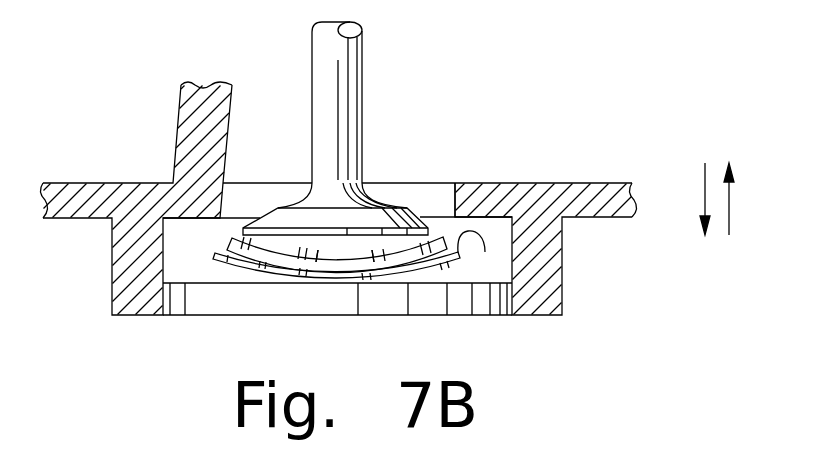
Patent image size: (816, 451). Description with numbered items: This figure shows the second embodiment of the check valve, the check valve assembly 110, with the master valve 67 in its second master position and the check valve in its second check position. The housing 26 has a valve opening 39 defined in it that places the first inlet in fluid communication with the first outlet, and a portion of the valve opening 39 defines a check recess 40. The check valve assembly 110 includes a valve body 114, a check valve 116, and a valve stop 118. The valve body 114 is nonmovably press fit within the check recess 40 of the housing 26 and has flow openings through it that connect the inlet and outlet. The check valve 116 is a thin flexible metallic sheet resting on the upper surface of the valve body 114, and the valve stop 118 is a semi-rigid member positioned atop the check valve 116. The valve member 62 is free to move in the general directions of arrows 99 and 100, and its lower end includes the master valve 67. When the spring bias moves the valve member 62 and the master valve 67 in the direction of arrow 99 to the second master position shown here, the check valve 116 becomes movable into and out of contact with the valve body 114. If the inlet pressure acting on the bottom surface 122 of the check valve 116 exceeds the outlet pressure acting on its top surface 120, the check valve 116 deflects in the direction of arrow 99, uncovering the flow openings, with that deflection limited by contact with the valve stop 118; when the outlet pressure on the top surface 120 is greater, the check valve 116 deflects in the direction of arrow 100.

The housing 26 is at (553, 243).
The valve opening 39 is at (455, 196).
The check recess 40 is at (493, 197).
The valve member 62 is at (348, 62).
The master valve 67 is at (267, 220).
The arrow 99 is at (731, 206).
The arrow 100 is at (705, 199).
The check valve assembly 110 is at (437, 112).
The valve body 114 is at (202, 305).
The check valve 116 is at (272, 278).
The valve stop 118 is at (232, 243).
The top surface 120 is at (485, 252).
The bottom surface 122 is at (433, 262).